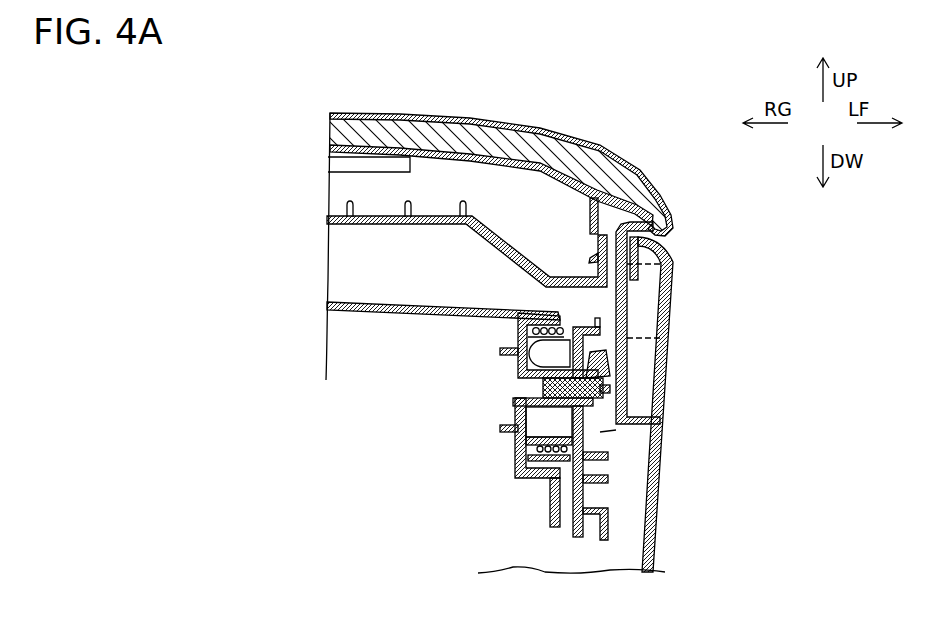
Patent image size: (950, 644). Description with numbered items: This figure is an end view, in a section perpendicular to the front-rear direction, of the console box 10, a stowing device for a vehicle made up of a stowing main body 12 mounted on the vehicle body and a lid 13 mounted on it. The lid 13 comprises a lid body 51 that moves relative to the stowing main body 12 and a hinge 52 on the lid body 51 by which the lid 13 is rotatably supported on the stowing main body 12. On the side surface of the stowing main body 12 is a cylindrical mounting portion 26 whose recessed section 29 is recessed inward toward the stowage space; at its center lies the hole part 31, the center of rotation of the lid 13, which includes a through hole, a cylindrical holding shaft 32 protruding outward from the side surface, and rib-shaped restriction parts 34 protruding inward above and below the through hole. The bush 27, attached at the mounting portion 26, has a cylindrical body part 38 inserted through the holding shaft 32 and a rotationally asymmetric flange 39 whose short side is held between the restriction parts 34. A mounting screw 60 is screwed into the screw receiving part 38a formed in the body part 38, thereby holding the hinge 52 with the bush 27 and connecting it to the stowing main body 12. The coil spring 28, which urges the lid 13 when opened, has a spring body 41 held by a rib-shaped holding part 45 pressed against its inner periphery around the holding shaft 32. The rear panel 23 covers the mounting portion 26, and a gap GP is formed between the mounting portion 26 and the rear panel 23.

The console box 10 is at (538, 82).
The lid body 51 is at (453, 119).
The lid 13 is at (603, 122).
The holding part 45 is at (569, 318).
The bush 27 is at (606, 332).
The rear panel 23 is at (655, 480).
The coil spring 28 is at (538, 312).
The recessed section 29 is at (522, 345).
The restriction part 34 is at (500, 351).
The flange 39 is at (522, 366).
The body part 38 is at (592, 362).
The screw receiving part 38a is at (604, 384).
The mounting screw 60 is at (605, 393).
The hole part 31 is at (540, 386).
The holding shaft 32 is at (518, 440).
The spring body 41 is at (518, 470).
The mounting portion 26 is at (534, 478).
The stowing main body 12 is at (562, 520).
The hinge 52 is at (600, 457).
The gap GP is at (616, 430).